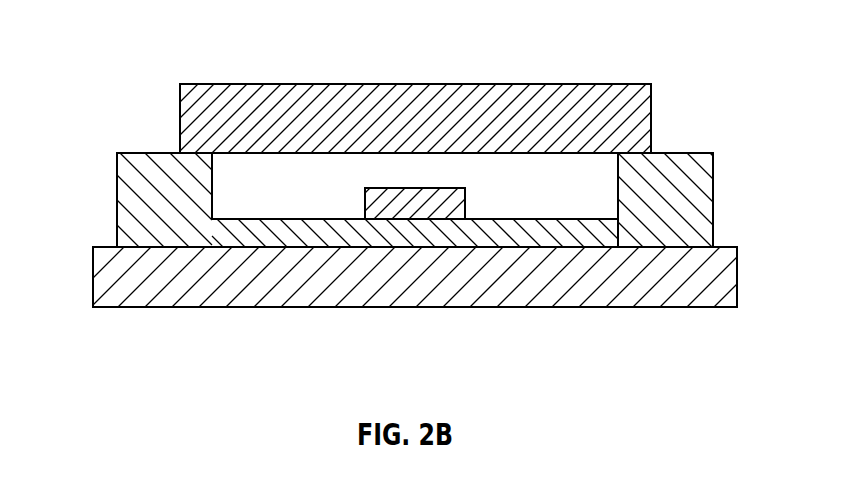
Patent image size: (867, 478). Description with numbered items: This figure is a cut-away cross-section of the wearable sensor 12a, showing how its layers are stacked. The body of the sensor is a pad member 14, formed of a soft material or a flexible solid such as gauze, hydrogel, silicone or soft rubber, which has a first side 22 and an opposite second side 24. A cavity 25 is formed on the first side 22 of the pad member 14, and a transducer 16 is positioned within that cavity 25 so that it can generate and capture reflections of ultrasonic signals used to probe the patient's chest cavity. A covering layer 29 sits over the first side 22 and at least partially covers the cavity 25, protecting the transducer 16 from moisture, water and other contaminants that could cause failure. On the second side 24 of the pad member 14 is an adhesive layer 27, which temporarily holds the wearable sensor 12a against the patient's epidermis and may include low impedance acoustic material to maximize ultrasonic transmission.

The wearable sensor 12a is at (633, 53).
The covering layer 29 is at (220, 85).
The pad member 14 is at (125, 178).
The first side 22 is at (677, 153).
The cavity 25 is at (212, 181).
The transducer 16 is at (448, 188).
The second side 24 is at (647, 278).
The adhesive layer 27 is at (702, 307).